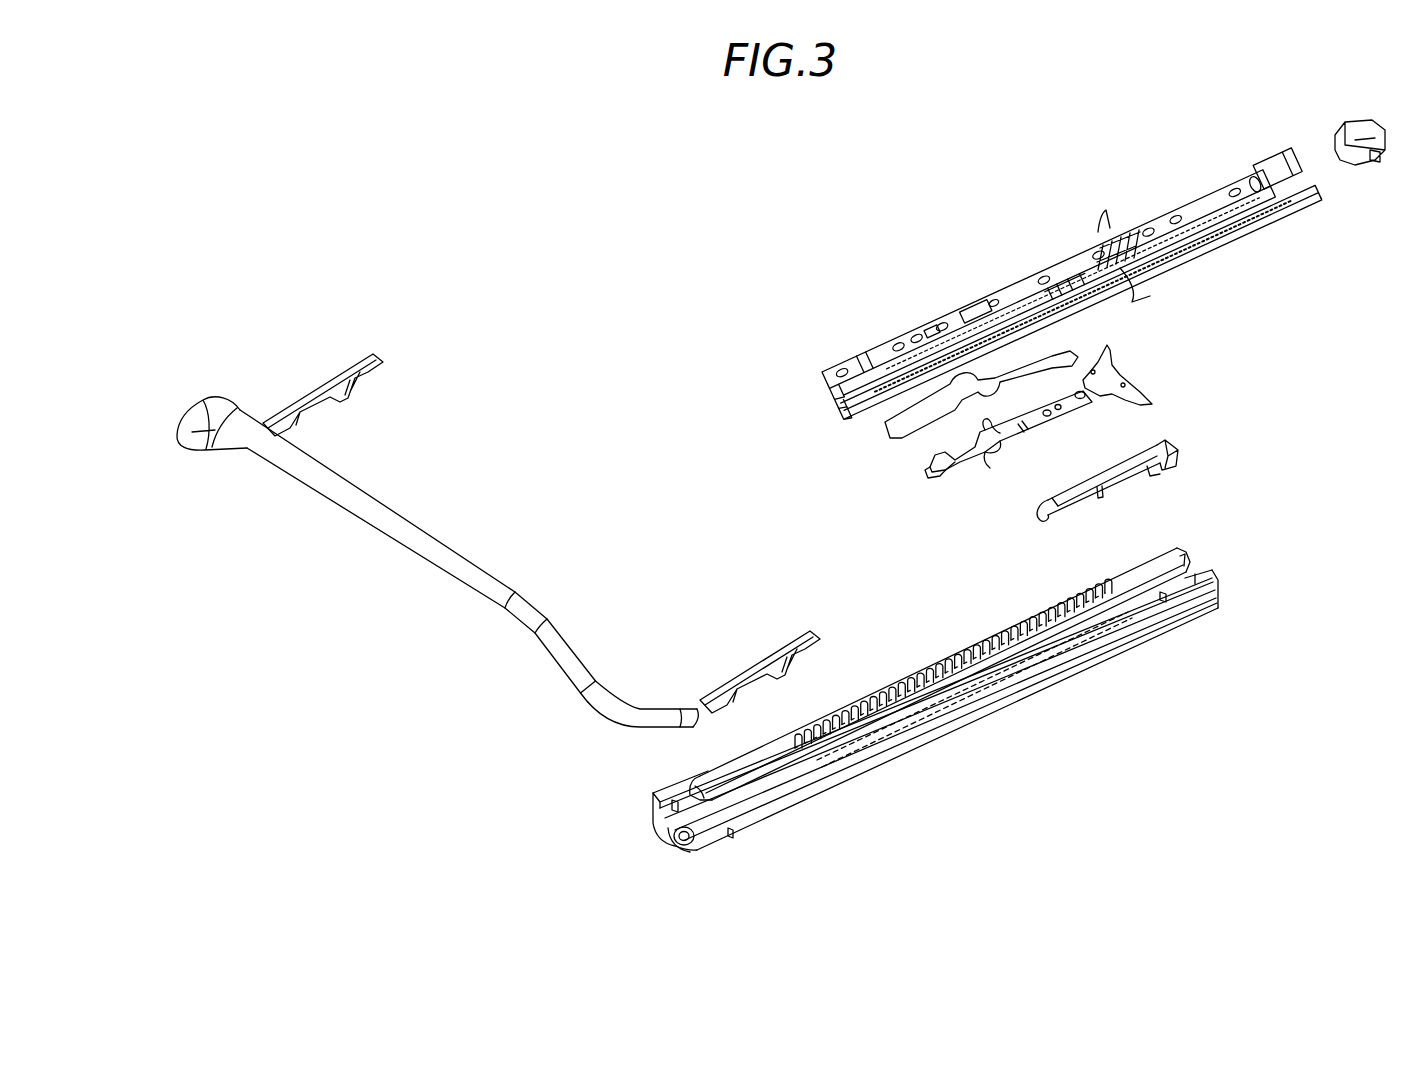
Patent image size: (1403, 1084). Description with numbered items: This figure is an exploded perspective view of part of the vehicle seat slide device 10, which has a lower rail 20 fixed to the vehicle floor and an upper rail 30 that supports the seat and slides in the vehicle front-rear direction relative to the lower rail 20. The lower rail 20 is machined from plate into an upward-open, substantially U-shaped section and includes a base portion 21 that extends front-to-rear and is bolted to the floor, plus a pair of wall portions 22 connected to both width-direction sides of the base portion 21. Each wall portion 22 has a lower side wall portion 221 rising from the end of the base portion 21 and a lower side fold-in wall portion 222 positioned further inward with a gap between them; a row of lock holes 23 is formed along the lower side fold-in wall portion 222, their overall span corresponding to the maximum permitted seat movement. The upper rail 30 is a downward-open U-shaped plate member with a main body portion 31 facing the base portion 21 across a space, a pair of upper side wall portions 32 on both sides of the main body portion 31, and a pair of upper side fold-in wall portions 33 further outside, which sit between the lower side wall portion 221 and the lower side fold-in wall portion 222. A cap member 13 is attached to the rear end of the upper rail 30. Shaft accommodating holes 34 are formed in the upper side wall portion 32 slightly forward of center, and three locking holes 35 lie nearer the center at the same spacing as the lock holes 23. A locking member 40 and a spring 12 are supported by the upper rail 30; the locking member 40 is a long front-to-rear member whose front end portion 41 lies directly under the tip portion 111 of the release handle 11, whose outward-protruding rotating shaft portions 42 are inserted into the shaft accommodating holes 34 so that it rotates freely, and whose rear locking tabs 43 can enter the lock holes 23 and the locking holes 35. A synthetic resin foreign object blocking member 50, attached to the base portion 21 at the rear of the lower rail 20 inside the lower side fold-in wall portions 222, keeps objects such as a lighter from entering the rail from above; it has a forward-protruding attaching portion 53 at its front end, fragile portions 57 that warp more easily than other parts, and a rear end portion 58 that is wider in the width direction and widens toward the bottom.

The vehicle seat slide device 10 is at (527, 226).
The release handle 11 is at (445, 546).
The tip portion 111 is at (387, 356).
The spring 12 is at (889, 446).
The cap member 13 is at (1350, 134).
The lower rail 20 is at (766, 826).
The base portion 21 is at (690, 852).
The wall portion 22 is at (875, 756).
The lower side wall portion 221 is at (640, 790).
The lower side fold-in wall portion 222 is at (703, 778).
The lock hole 23 is at (1006, 692).
The upper rail 30 is at (1232, 184).
The main body portion 31 is at (1156, 216).
The upper side wall portion 32 is at (1262, 204).
The upper side fold-in wall portion 33 is at (1250, 238).
The shaft accommodating hole 34 is at (1030, 320).
The locking hole 35 is at (1098, 218).
The locking member 40 is at (1062, 414).
The front end portion 41 is at (925, 482).
The rotating shaft portion 42 is at (988, 462).
The locking tab 43 is at (1107, 356).
The foreign object blocking member 50 is at (1078, 500).
The attaching portion 53 is at (1040, 524).
The fragile portion 57 is at (1148, 478).
The rear end portion 58 is at (1176, 452).